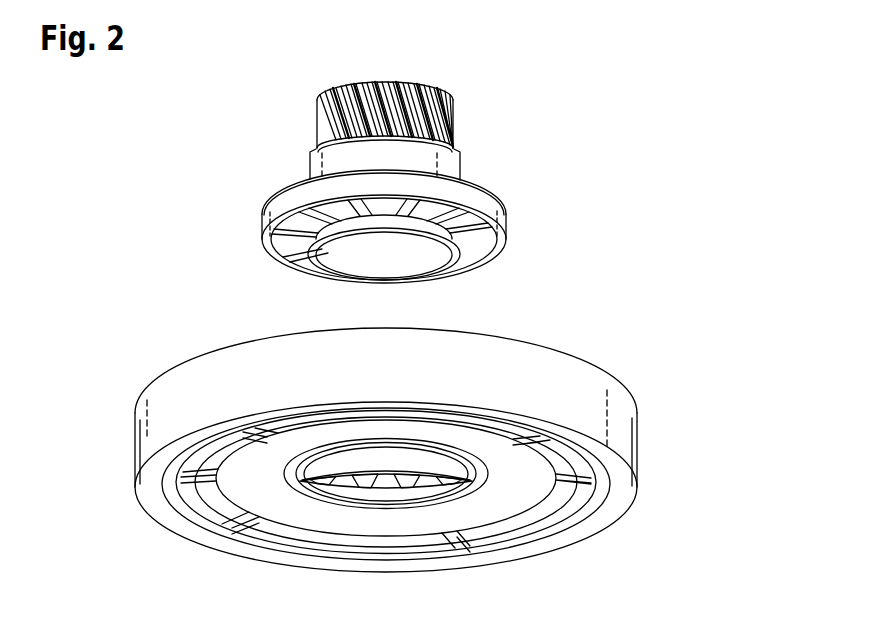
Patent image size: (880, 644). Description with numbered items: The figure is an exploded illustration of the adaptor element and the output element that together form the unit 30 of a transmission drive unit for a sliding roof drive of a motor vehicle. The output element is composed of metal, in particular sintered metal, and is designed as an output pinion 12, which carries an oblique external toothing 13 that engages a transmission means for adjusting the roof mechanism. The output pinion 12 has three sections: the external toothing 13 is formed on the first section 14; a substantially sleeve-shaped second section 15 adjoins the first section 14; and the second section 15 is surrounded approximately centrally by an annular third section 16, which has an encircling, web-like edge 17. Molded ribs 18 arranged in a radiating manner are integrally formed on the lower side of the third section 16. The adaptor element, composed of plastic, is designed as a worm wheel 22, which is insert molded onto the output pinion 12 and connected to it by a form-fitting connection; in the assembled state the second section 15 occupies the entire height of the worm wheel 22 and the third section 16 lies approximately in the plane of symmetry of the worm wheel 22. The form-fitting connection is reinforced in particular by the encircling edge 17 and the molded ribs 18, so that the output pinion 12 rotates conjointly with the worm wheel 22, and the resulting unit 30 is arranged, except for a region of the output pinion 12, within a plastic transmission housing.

The output pinion 12 is at (272, 122).
The external toothing 13 is at (427, 95).
The first section 14 is at (471, 120).
The second section 15 is at (478, 162).
The third section 16 is at (514, 195).
The encircling edge 17 is at (273, 209).
The molded ribs 18 is at (280, 258).
The worm wheel 22 is at (606, 355).
The unit 30 is at (104, 280).